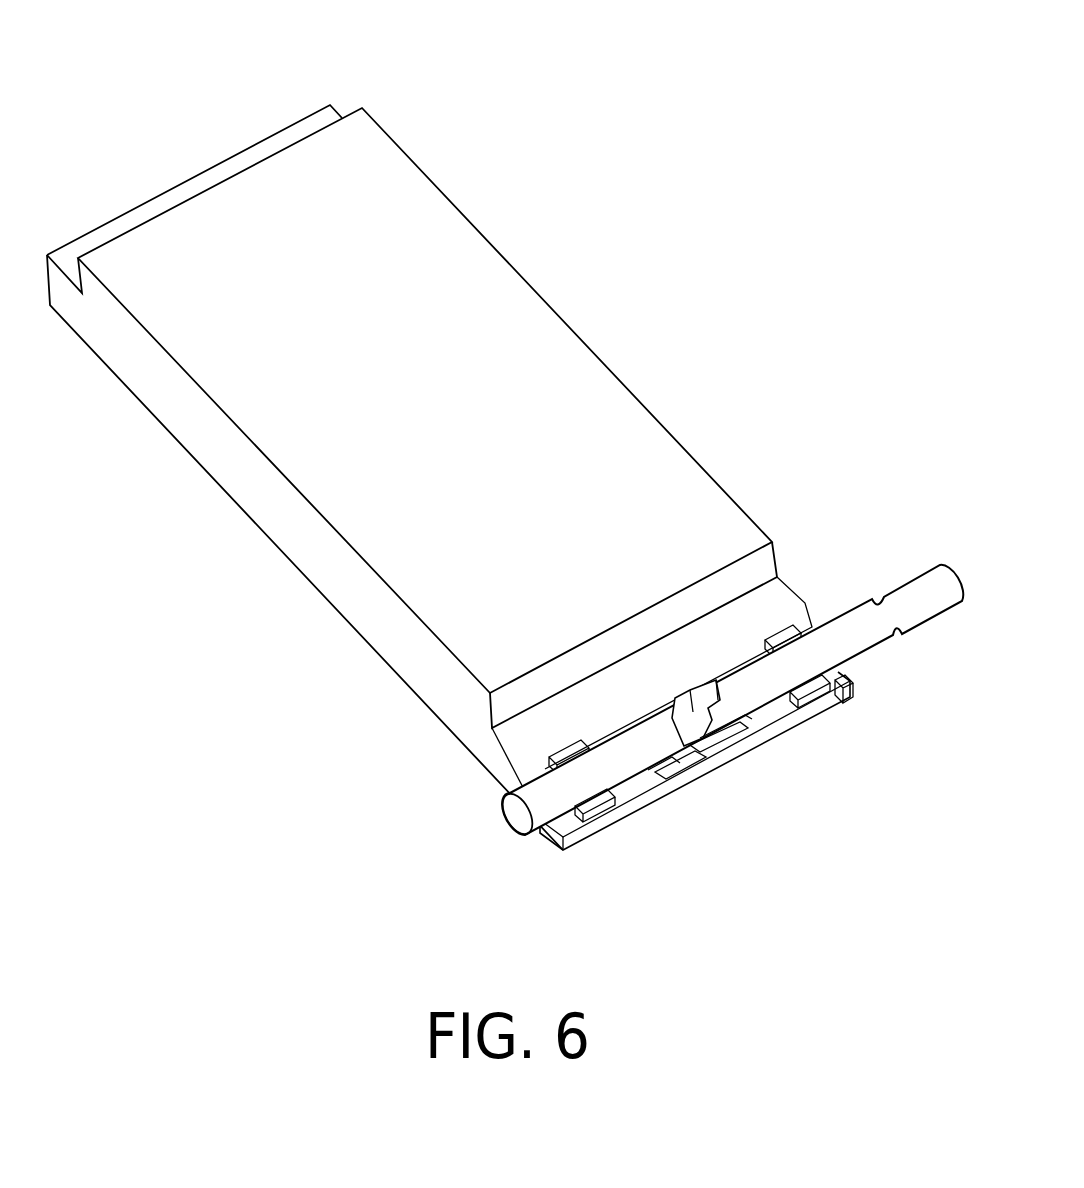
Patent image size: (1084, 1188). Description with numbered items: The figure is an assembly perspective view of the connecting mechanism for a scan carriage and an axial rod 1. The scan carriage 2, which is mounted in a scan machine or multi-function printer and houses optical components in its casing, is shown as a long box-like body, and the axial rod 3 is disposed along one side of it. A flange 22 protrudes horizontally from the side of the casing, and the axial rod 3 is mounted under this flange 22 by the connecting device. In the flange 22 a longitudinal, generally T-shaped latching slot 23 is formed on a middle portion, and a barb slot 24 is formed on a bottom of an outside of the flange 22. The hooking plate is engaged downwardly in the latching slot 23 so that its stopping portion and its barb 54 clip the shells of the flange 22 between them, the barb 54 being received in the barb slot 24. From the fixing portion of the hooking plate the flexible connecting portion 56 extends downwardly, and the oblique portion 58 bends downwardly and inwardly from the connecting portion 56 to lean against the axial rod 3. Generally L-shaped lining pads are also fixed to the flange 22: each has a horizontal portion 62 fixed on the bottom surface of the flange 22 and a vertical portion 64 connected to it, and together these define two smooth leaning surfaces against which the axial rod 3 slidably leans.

The connecting mechanism for a scan carriage and an axial rod 1 is at (672, 47).
The scan carriage 2 is at (558, 343).
The axial rod 3 is at (915, 588).
The flange 22 is at (602, 828).
The latching slot 23 is at (680, 780).
The barb slot 24 is at (712, 778).
The barb 54 is at (722, 760).
The flexible connecting portion 56 is at (750, 736).
The oblique portion 58 is at (650, 760).
The horizontal portion 62 is at (838, 700).
The vertical portion 64 is at (800, 645).